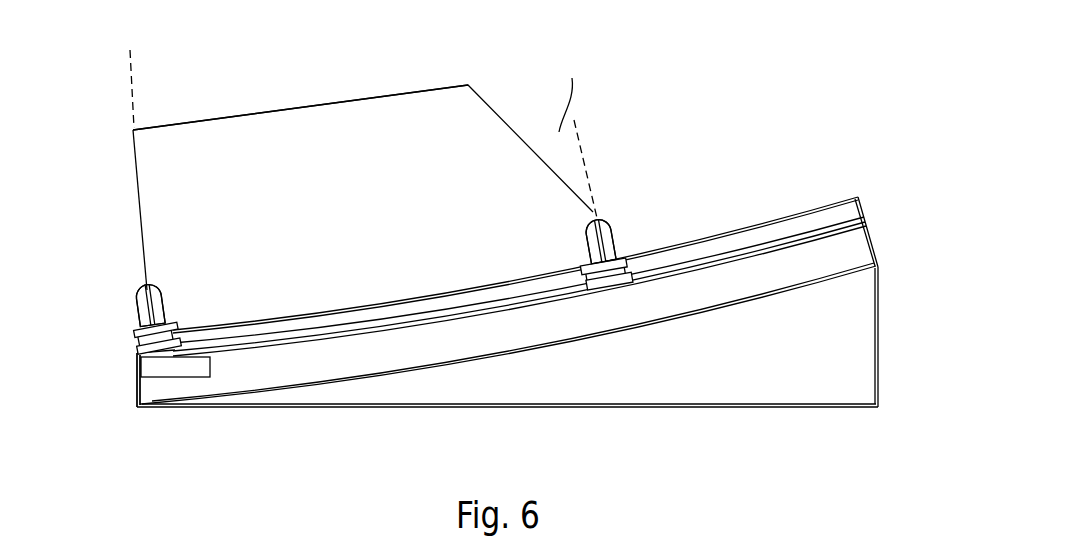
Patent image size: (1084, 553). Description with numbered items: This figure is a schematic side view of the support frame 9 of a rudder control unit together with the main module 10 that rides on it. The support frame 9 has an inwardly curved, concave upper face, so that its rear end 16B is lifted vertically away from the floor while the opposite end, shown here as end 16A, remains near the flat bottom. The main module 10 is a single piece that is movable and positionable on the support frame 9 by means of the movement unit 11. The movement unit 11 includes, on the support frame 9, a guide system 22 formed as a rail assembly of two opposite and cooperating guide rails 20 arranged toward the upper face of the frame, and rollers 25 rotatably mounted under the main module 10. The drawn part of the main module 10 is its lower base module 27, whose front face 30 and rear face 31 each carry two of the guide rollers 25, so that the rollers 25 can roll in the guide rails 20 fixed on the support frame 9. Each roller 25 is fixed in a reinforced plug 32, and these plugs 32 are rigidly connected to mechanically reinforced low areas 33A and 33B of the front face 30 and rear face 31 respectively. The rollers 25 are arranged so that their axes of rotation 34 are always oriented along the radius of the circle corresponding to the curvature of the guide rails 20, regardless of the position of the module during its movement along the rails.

The support frame 9 is at (505, 281).
The main module 10 is at (320, 157).
The movement unit 11 is at (118, 353).
The first end wall 16A is at (126, 375).
The rear end 16B is at (884, 256).
The guide rails 20 is at (509, 317).
The guide system 22 is at (411, 333).
The rollers 25 is at (130, 338).
The lower base module 27 is at (322, 104).
The front face 30 is at (320, 157).
The rear face 31 is at (557, 142).
The reinforced plugs 32 is at (137, 313).
The low area 33A is at (145, 278).
The low area 33B is at (600, 218).
The axes of rotation 34 is at (130, 88).